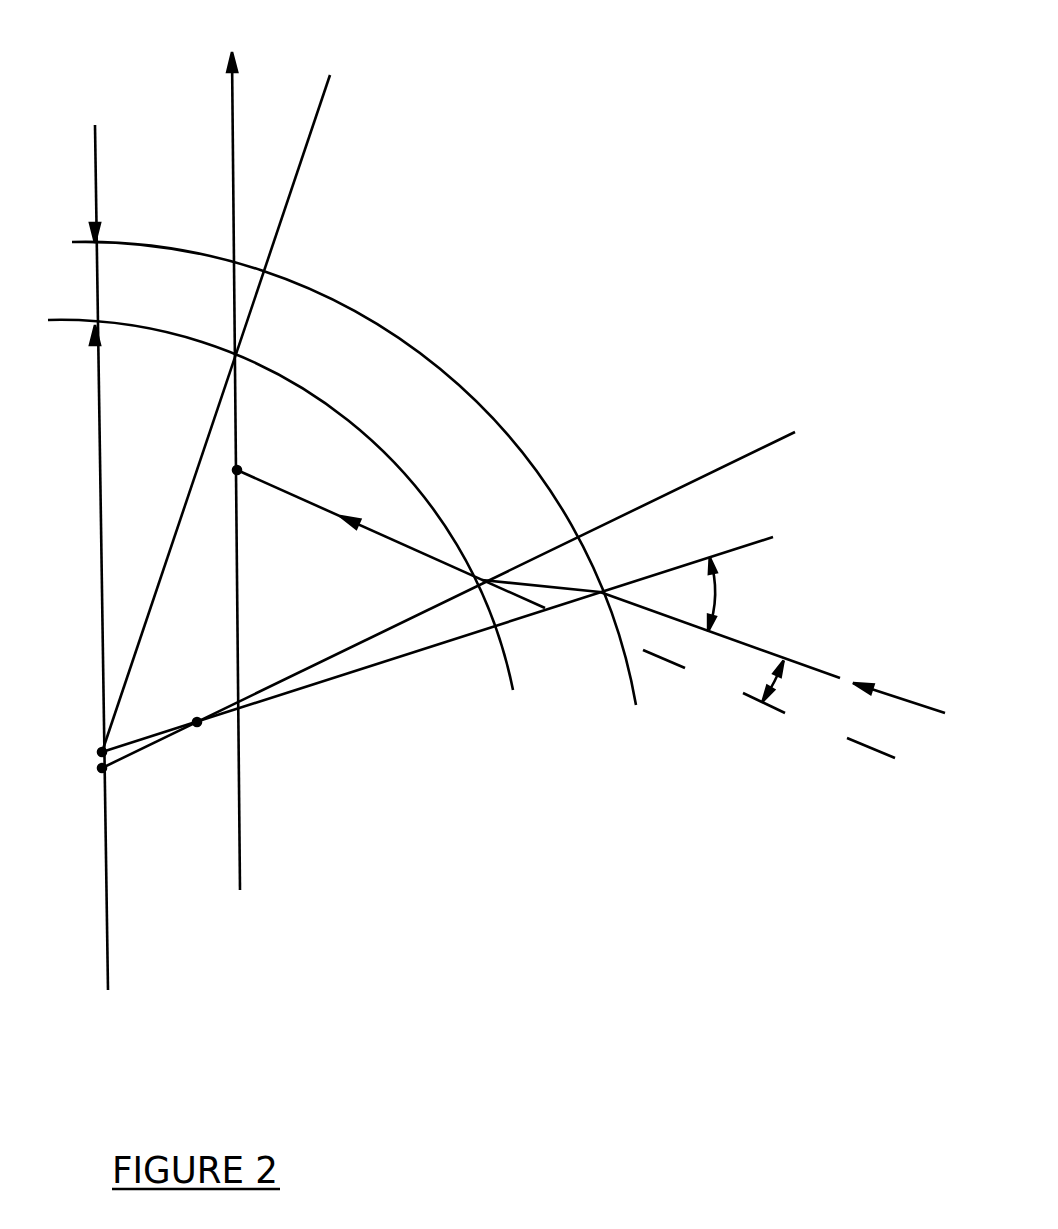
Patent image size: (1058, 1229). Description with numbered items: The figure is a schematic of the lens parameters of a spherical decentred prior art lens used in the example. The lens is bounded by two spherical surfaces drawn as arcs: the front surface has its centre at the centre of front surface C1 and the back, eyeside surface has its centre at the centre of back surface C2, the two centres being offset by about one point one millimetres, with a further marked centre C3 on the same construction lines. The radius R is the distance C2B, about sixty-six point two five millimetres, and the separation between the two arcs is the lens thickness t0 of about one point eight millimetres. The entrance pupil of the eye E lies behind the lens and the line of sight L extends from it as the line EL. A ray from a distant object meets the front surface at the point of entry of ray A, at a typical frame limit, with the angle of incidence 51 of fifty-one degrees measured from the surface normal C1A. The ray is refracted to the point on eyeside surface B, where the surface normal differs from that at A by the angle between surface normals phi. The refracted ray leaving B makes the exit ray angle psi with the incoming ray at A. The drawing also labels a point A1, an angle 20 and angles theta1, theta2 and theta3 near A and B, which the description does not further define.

The radius R is at (184, 551).
The line of sight L is at (229, 449).
The entrance pupil of the eye E is at (241, 467).
The point on eyeside surface B is at (486, 574).
The point of entry of ray A is at (604, 585).
The point A1 is at (491, 669).
The centre of front surface C1 is at (414, 656).
The centre of back surface C2 is at (425, 628).
The center C3 is at (205, 758).
The lens thickness t0 is at (113, 284).
The 20 degree angle 20 is at (216, 413).
The angle of incidence 51 is at (688, 594).
The angle between surface normals phi is at (332, 680).
The exit ray angle psi is at (794, 704).
The angle theta 1 theta1 is at (548, 597).
The angle theta 2 theta2 is at (523, 576).
The angle theta 3 theta3 is at (410, 582).